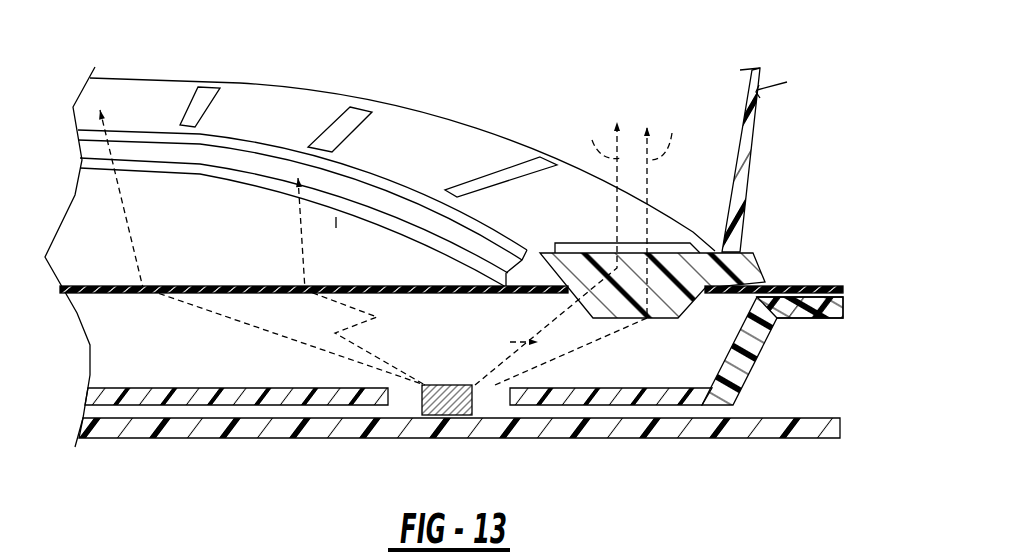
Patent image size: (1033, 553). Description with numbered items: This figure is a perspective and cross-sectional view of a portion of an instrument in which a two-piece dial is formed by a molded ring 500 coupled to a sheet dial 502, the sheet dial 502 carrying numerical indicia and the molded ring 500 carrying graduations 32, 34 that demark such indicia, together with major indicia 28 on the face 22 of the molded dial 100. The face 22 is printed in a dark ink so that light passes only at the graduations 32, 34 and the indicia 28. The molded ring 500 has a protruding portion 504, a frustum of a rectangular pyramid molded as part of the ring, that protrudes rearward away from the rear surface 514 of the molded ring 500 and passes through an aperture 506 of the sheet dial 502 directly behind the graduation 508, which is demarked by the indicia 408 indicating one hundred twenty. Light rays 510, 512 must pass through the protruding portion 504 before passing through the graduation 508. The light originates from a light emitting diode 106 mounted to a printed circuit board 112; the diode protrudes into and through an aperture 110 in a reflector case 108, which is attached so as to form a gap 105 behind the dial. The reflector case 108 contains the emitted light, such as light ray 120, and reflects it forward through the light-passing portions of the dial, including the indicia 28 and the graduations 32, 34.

The major indicia 28 is at (140, 155).
The graduation 34 is at (207, 113).
The graduation 32 is at (325, 140).
The molded ring 500 is at (430, 113).
The indicia 408 is at (336, 228).
The light ray 510 is at (593, 125).
The light ray 512 is at (734, 160).
The graduation 508 is at (685, 242).
The sheet dial 502 is at (785, 286).
The aperture 506 is at (562, 292).
The protruding portion 504 is at (700, 296).
The rear surface 514 is at (708, 288).
The reflector case 108 is at (740, 350).
The gap 105 is at (151, 361).
The face 22 is at (222, 259).
The molded dial 100 is at (125, 257).
The light ray 120 is at (313, 246).
The aperture 110 is at (390, 395).
The light emitting diode 106 is at (473, 400).
The printed circuit board 112 is at (577, 437).